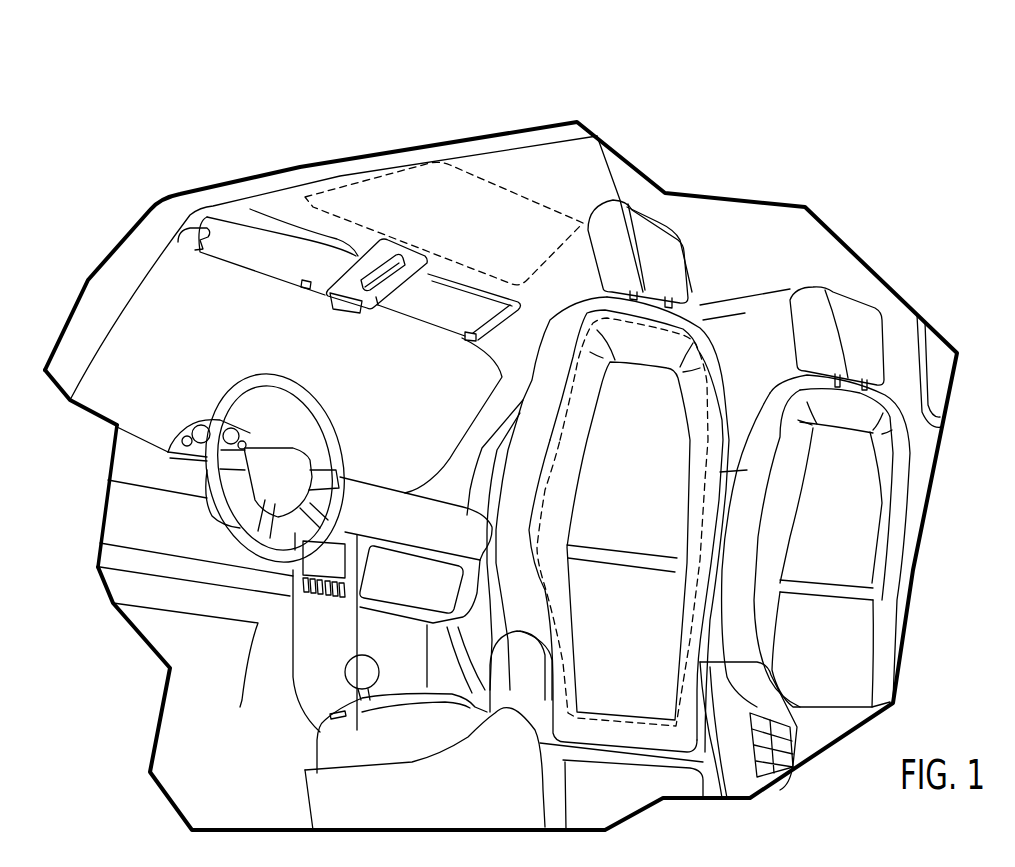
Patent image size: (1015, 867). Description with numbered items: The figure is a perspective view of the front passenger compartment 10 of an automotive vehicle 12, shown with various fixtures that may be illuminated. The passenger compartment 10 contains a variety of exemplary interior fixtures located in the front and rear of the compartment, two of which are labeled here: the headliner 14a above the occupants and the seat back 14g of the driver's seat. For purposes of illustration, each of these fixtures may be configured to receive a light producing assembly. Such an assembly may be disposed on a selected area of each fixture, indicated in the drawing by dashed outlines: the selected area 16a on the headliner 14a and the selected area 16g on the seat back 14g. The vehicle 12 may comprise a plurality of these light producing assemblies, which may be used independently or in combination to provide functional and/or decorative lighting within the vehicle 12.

The passenger compartment 10 is at (686, 170).
The automotive vehicle 12 is at (826, 49).
The headliner 14a is at (550, 170).
The seat back 14g is at (702, 322).
The selected area 16a is at (384, 172).
The selected area 16g is at (723, 380).